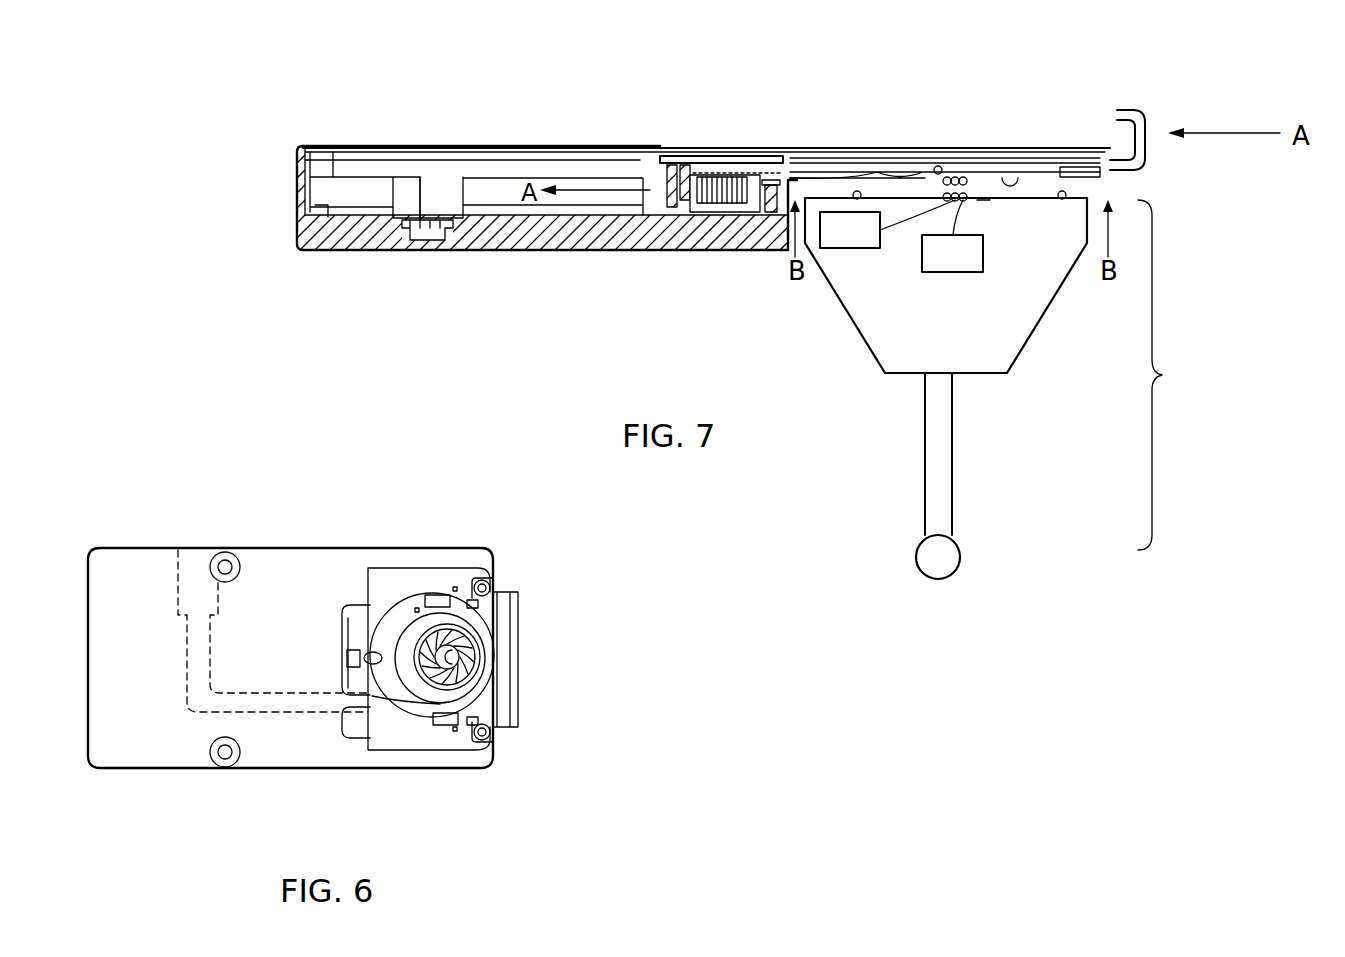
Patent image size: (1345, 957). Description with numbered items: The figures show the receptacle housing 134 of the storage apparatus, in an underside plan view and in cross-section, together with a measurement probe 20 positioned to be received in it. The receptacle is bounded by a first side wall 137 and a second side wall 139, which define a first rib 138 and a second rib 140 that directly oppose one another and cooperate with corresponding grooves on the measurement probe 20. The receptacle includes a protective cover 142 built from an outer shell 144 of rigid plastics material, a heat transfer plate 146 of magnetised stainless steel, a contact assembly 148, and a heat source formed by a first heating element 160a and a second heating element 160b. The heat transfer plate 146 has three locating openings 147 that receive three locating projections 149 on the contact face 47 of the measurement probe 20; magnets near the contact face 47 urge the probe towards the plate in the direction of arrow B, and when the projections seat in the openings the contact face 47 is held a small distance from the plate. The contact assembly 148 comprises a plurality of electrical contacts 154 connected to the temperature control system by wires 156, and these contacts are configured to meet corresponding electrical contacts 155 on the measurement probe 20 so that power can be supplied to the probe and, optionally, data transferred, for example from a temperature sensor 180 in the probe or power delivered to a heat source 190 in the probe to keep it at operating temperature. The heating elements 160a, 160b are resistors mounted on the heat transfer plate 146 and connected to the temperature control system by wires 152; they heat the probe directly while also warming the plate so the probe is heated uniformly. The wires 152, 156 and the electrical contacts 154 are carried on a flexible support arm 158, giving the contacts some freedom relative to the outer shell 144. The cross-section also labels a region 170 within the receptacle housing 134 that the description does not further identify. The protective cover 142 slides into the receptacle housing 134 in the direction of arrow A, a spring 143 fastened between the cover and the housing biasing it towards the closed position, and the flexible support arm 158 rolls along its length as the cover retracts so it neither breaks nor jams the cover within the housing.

In FIG. 7, the measurement probe 20 is at (1001, 388).
In FIG. 7, the contact face 47 is at (1097, 172).
In FIG. 7, the receptacle housing 134 is at (305, 238).
In FIG. 6, the receptacle housing 134 is at (110, 563).
In FIG. 6, the first side wall 137 is at (430, 770).
In FIG. 6, the first rib 138 is at (500, 755).
In FIG. 6, the second side wall 139 is at (437, 567).
In FIG. 6, the second rib 140 is at (495, 568).
In FIG. 7, the protective cover 142 is at (1033, 118).
In FIG. 6, the protective cover 142 is at (518, 657).
In FIG. 7, the spring 143 is at (722, 198).
In FIG. 7, the outer shell 144 is at (1060, 170).
In FIG. 6, the outer shell 144 is at (480, 717).
In FIG. 7, the heat transfer plate 146 is at (1003, 172).
In FIG. 6, the heat transfer plate 146 is at (470, 586).
In FIG. 7, the locating openings 147 is at (873, 178).
In FIG. 6, the locating openings 147 is at (348, 655).
In FIG. 6, the contact assembly 148 is at (372, 652).
In FIG. 7, the locating projections 149 is at (858, 192).
In FIG. 6, the wires 152 is at (428, 597).
In FIG. 7, the electrical contacts 154 is at (947, 200).
In FIG. 6, the electrical contacts 154 is at (455, 633).
In FIG. 7, the electrical contacts 155 is at (980, 200).
In FIG. 6, the wires 156 is at (440, 692).
In FIG. 7, the flexible support arm 158 is at (510, 165).
In FIG. 6, the flexible support arm 158 is at (287, 712).
In FIG. 6, the first heating element 160a is at (458, 585).
In FIG. 6, the second heating element 160b is at (497, 747).
In FIG. 7, the cavity 170 is at (437, 197).
In FIG. 7, the temperature sensor 180 is at (873, 244).
In FIG. 7, the heat source 190 is at (976, 268).